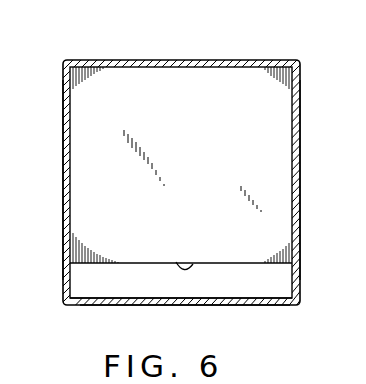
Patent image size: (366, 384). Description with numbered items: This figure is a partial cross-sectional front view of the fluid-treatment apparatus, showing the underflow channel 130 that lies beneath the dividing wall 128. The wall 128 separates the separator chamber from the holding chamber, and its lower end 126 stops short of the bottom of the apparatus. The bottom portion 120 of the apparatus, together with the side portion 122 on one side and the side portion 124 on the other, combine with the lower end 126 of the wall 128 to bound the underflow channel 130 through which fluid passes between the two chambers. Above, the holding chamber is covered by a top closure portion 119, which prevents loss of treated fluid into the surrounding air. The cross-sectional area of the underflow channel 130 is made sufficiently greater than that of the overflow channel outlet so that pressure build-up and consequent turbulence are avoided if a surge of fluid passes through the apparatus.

The top closure portion 119 is at (165, 61).
The bottom portion 120 is at (165, 305).
The side portion 122 is at (63, 280).
The side portion 124 is at (300, 277).
The lower end 126 is at (177, 262).
The wall 128 is at (210, 163).
The underflow channel 130 is at (140, 298).